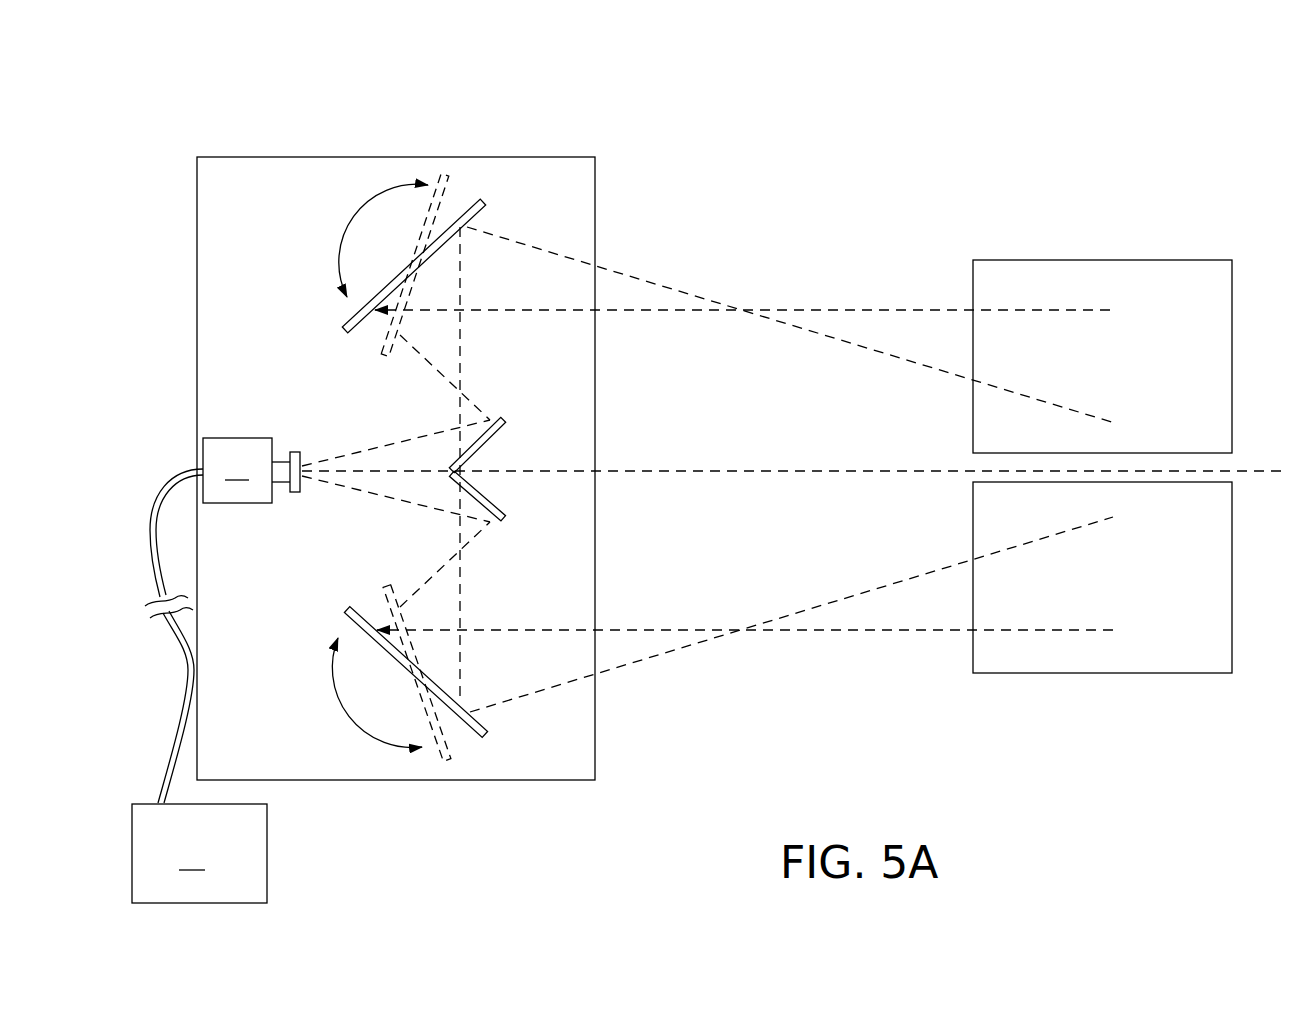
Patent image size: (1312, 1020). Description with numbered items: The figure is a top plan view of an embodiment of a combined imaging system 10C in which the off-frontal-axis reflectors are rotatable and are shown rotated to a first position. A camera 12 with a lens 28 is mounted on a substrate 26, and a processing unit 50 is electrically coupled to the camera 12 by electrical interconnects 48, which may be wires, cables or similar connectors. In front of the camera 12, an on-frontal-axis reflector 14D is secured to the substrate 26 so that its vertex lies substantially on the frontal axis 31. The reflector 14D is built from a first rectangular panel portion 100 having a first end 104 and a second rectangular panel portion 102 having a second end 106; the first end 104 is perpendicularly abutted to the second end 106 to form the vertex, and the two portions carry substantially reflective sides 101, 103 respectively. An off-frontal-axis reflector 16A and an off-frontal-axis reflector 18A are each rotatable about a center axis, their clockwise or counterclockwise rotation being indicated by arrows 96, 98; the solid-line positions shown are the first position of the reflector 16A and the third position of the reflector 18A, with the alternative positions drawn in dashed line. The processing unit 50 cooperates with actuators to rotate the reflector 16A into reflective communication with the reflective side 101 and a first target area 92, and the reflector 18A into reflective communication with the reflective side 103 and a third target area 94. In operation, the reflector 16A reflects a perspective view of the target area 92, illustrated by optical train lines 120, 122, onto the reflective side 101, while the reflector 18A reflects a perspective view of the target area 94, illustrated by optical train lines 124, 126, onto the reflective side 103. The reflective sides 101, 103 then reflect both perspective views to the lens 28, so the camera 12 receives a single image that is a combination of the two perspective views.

The combined imaging system 10C is at (672, 130).
The camera 12 is at (251, 470).
The on-frontal-axis reflector 14D is at (538, 451).
The off-frontal-axis reflector 16A is at (464, 192).
The off-frontal-axis reflector 18A is at (468, 757).
The substrate 26 is at (588, 758).
The lens 28 is at (314, 464).
The frontal axis 31 is at (1288, 473).
The electrical interconnects 48 is at (150, 513).
The processing unit 50 is at (199, 853).
The first target area 92 is at (1063, 260).
The third target area 94 is at (1050, 673).
The arrow 96 is at (353, 223).
The arrow 98 is at (333, 680).
The first rectangular panel portion 100 is at (507, 432).
The reflective side 101 is at (487, 433).
The second rectangular panel portion 102 is at (503, 507).
The reflective side 103 is at (475, 500).
The first end 104 is at (444, 480).
The second end 106 is at (470, 467).
The optical train line 120 is at (660, 287).
The optical train line 122 is at (685, 315).
The optical train line 124 is at (660, 628).
The optical train line 126 is at (663, 653).